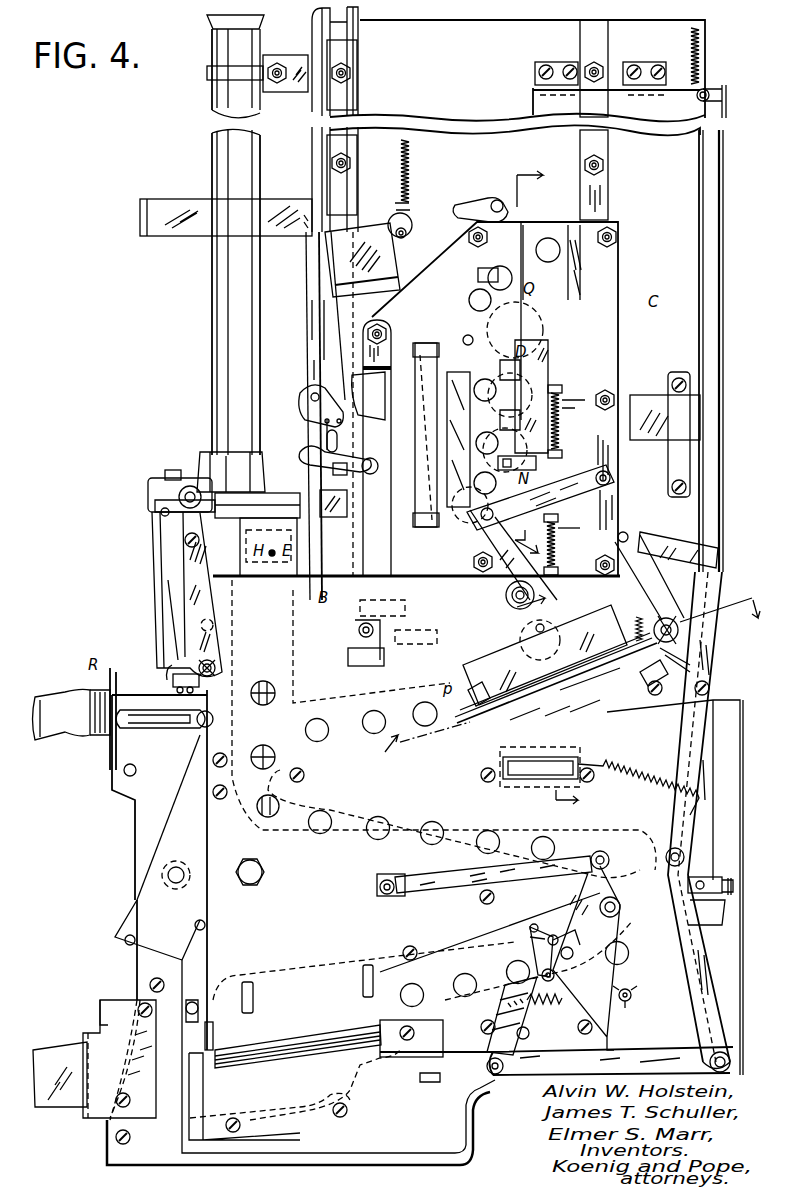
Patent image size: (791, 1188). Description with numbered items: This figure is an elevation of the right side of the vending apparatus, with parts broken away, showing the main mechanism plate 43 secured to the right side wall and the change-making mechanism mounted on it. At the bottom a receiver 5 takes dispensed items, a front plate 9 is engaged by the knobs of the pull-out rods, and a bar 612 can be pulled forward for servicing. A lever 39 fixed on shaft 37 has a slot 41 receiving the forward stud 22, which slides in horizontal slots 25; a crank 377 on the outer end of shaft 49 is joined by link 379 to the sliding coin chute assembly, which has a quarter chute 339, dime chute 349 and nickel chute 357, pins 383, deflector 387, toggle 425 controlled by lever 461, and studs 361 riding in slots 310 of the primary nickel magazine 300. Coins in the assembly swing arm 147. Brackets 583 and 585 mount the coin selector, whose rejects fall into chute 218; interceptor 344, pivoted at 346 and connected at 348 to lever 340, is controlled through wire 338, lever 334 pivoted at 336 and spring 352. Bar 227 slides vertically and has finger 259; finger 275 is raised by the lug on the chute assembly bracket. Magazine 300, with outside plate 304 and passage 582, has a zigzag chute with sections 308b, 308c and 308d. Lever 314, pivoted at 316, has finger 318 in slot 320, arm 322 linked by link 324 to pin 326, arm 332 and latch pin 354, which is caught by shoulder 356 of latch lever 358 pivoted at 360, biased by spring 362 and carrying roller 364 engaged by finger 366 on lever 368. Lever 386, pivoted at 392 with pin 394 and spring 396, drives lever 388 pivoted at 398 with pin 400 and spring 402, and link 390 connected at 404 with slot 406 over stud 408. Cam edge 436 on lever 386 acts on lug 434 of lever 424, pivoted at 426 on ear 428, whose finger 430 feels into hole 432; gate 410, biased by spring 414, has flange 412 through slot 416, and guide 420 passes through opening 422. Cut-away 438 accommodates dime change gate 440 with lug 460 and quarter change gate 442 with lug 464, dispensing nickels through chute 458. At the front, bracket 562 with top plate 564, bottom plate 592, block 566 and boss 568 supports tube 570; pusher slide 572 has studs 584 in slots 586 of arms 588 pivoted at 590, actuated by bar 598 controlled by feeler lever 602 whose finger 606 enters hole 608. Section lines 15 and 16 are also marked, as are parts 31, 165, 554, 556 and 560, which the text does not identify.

The bracket section line 5 is at (85, 1023).
The side plate 9 is at (112, 668).
The section line 15 is at (569, 673).
The section line 16 is at (547, 706).
The slide rod 22 is at (200, 718).
The slot 25 is at (150, 728).
The knob 31 is at (80, 696).
The pivot boss 37 is at (165, 872).
The bracket plate 39 is at (165, 836).
The pin 41 is at (198, 727).
The frame rail 43 is at (314, 50).
The bolt 49 is at (505, 595).
The bracket 147 is at (540, 376).
The pin 165 is at (530, 465).
The plate 218 is at (392, 252).
The block 227 is at (345, 508).
The lug 259 is at (330, 470).
The bar 275 is at (385, 595).
The mounting plate 300 is at (205, 822).
The plate portion 304 is at (200, 962).
The plate portion 308b is at (330, 707).
The plate portion 308c is at (322, 843).
The plate portion 308d is at (325, 986).
The plate 310 is at (392, 636).
The link 314 is at (579, 896).
The pivot 316 is at (612, 918).
The pin 318 is at (579, 942).
The pivot 320 is at (571, 958).
The pivot 322 is at (602, 872).
The link 324 is at (588, 852).
The pivot 326 is at (385, 896).
The stop 332 is at (725, 884).
The bracket 334 is at (710, 913).
The screw 336 is at (733, 898).
The rail 338 is at (721, 234).
The plate 339 is at (548, 212).
The pin 340 is at (720, 90).
The bar 344 is at (533, 100).
The bracket 346 is at (538, 80).
The link 348 is at (700, 100).
The plate 349 is at (534, 204).
The spring 352 is at (692, 44).
The lever 354 is at (542, 925).
The pin 356 is at (530, 926).
The lever 357 is at (515, 210).
The lug 358 is at (531, 937).
The stud 360 is at (619, 992).
The spring 361 is at (557, 552).
The nut 362 is at (618, 998).
The pin 364 is at (530, 1034).
The spring 366 is at (536, 1012).
The arm 368 is at (514, 971).
The arm 377 is at (492, 560).
The arm 379 is at (548, 508).
The stud 383 is at (470, 335).
The link 386 is at (636, 536).
The bar 387 is at (448, 348).
The lever 388 is at (708, 688).
The bar 390 is at (665, 1058).
The pivot 392 is at (680, 630).
The pivot 394 is at (623, 532).
The plate 396 is at (552, 655).
The pivot 398 is at (686, 857).
The link 400 is at (678, 551).
The spring 402 is at (620, 790).
The pivot 404 is at (728, 1058).
The tab 406 is at (418, 1078).
The pivot 408 is at (490, 1072).
The rod 410 is at (470, 720).
The rod 412 is at (588, 713).
The wheel 414 is at (538, 655).
The rod 416 is at (575, 714).
The housing 420 is at (503, 764).
The housing outline 422 is at (540, 758).
The rod 424 is at (435, 732).
The bar 425 is at (465, 505).
The rod 426 is at (525, 718).
The rod 428 is at (600, 692).
The block 430 is at (473, 692).
The roller 432 is at (425, 708).
The block 434 is at (645, 676).
The link 436 is at (697, 664).
The bracket 438 is at (182, 1057).
The rail 440 is at (232, 1050).
The rail 442 is at (338, 1030).
The plate 458 is at (288, 1122).
The tab 460 is at (250, 984).
The lever 461 is at (304, 452).
The tab 464 is at (368, 965).
The bolt 554 is at (412, 234).
The roller 556 is at (405, 218).
The spring 560 is at (400, 150).
The arm 562 is at (145, 565).
The pin 564 is at (152, 510).
The bracket 566 is at (245, 485).
The bracket 568 is at (205, 455).
The tube 570 is at (211, 291).
The bar 572 is at (155, 495).
The bolt 582 is at (292, 600).
The bracket 583 is at (348, 86).
The block 584 is at (168, 480).
The bracket 585 is at (350, 150).
The pivot 586 is at (188, 486).
The arm 588 is at (185, 573).
The bolt 590 is at (212, 660).
The bracket 592 is at (172, 677).
The box 598 is at (150, 485).
The screw 602 is at (258, 748).
The nut 606 is at (275, 820).
The screw 608 is at (279, 806).
The bar 612 is at (140, 226).